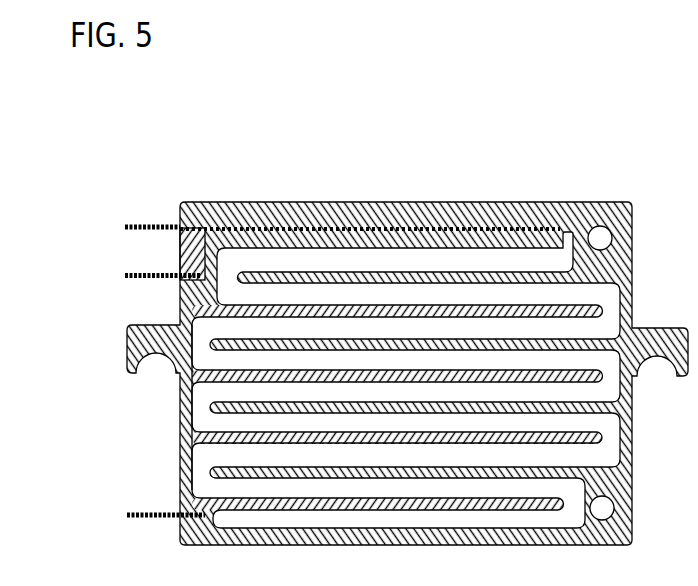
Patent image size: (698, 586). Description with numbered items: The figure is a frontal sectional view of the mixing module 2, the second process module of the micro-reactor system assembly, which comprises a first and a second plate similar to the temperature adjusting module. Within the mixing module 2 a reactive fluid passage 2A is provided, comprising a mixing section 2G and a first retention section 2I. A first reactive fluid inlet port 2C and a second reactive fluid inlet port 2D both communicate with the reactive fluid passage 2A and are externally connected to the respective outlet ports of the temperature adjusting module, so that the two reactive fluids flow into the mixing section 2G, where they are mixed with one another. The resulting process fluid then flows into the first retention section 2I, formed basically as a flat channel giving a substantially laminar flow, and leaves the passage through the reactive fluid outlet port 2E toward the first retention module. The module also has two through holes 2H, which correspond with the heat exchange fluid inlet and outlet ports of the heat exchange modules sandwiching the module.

The mixing module 2 is at (462, 207).
The reactive fluid passage 2A is at (302, 260).
The first reactive fluid inlet port 2C is at (123, 228).
The second reactive fluid inlet port 2D is at (123, 276).
The reactive fluid outlet port 2E is at (123, 517).
The mixing section 2G is at (543, 224).
The through holes 2H is at (603, 237).
The first retention section 2I is at (200, 398).